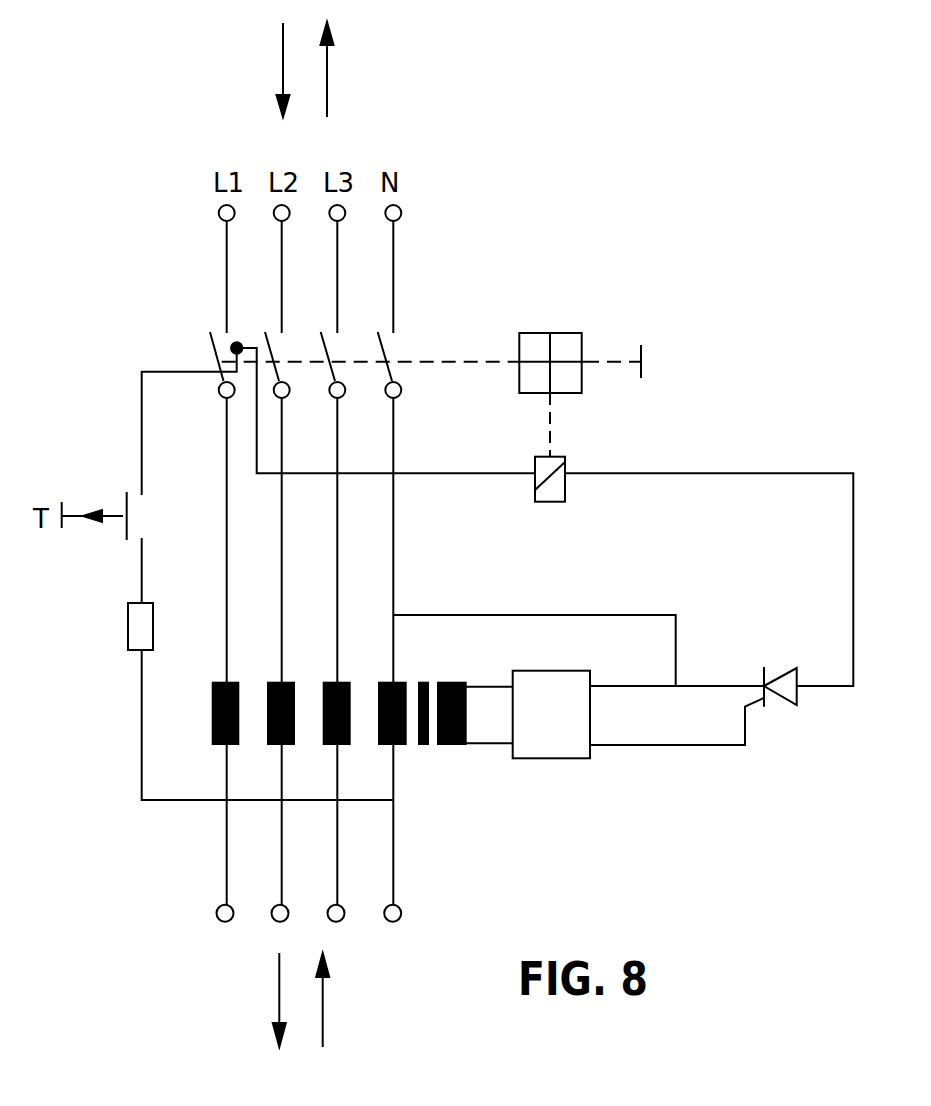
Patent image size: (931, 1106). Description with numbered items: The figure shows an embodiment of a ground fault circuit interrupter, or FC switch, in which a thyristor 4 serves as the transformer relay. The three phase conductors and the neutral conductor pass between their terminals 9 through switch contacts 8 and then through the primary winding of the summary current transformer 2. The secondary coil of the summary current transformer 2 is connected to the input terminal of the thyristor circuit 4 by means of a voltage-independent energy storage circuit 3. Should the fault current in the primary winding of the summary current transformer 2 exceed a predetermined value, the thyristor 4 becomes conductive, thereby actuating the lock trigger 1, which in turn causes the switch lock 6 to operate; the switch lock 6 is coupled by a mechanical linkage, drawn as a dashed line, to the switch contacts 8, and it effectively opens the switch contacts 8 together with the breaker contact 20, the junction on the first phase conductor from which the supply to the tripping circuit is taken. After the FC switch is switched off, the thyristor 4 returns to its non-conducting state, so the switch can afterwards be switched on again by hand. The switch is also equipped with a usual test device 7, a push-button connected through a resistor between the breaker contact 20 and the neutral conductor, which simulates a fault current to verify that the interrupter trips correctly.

The lock trigger 1 is at (565, 465).
The summary current transformer 2 is at (212, 705).
The voltage-independent energy storage circuit 3 is at (570, 760).
The thyristor 4 is at (782, 698).
The switch lock 6 is at (562, 333).
The test device 7 is at (98, 518).
The switch contacts 8 is at (211, 347).
The terminals 9 is at (402, 213).
The breaker contact 20 is at (233, 344).